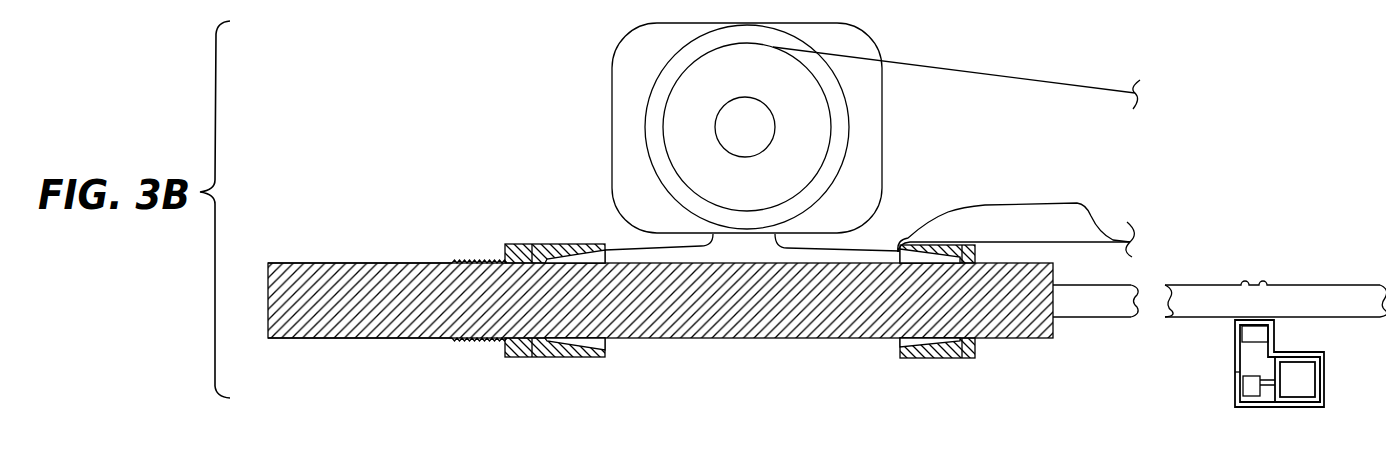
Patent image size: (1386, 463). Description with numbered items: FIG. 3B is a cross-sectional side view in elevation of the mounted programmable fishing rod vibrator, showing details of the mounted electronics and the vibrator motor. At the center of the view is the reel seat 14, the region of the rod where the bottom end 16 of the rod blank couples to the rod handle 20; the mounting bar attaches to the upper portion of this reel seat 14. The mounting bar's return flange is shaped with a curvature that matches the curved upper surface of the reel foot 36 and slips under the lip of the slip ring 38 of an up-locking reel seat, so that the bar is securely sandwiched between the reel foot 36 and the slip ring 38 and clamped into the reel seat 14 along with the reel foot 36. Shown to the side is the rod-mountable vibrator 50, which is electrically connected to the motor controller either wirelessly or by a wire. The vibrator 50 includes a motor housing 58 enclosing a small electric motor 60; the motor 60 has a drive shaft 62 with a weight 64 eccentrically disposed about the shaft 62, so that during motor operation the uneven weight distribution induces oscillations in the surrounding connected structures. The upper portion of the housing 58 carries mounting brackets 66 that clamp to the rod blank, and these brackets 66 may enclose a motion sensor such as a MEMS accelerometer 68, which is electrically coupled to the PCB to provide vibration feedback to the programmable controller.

The reel seat 14 is at (755, 338).
The bottom end 16 is at (1078, 317).
The rod handle 20 is at (340, 338).
The reel foot 36 is at (873, 253).
The slip ring 38 is at (947, 358).
The rod-mountable vibrator 50 is at (1230, 372).
The motor housing 58 is at (1327, 392).
The electric motor 60 is at (1298, 380).
The drive shaft 62 is at (1265, 372).
The weight 64 is at (1250, 398).
The mounting brackets 66 is at (1263, 280).
The MEMS accelerometer 68 is at (1250, 335).